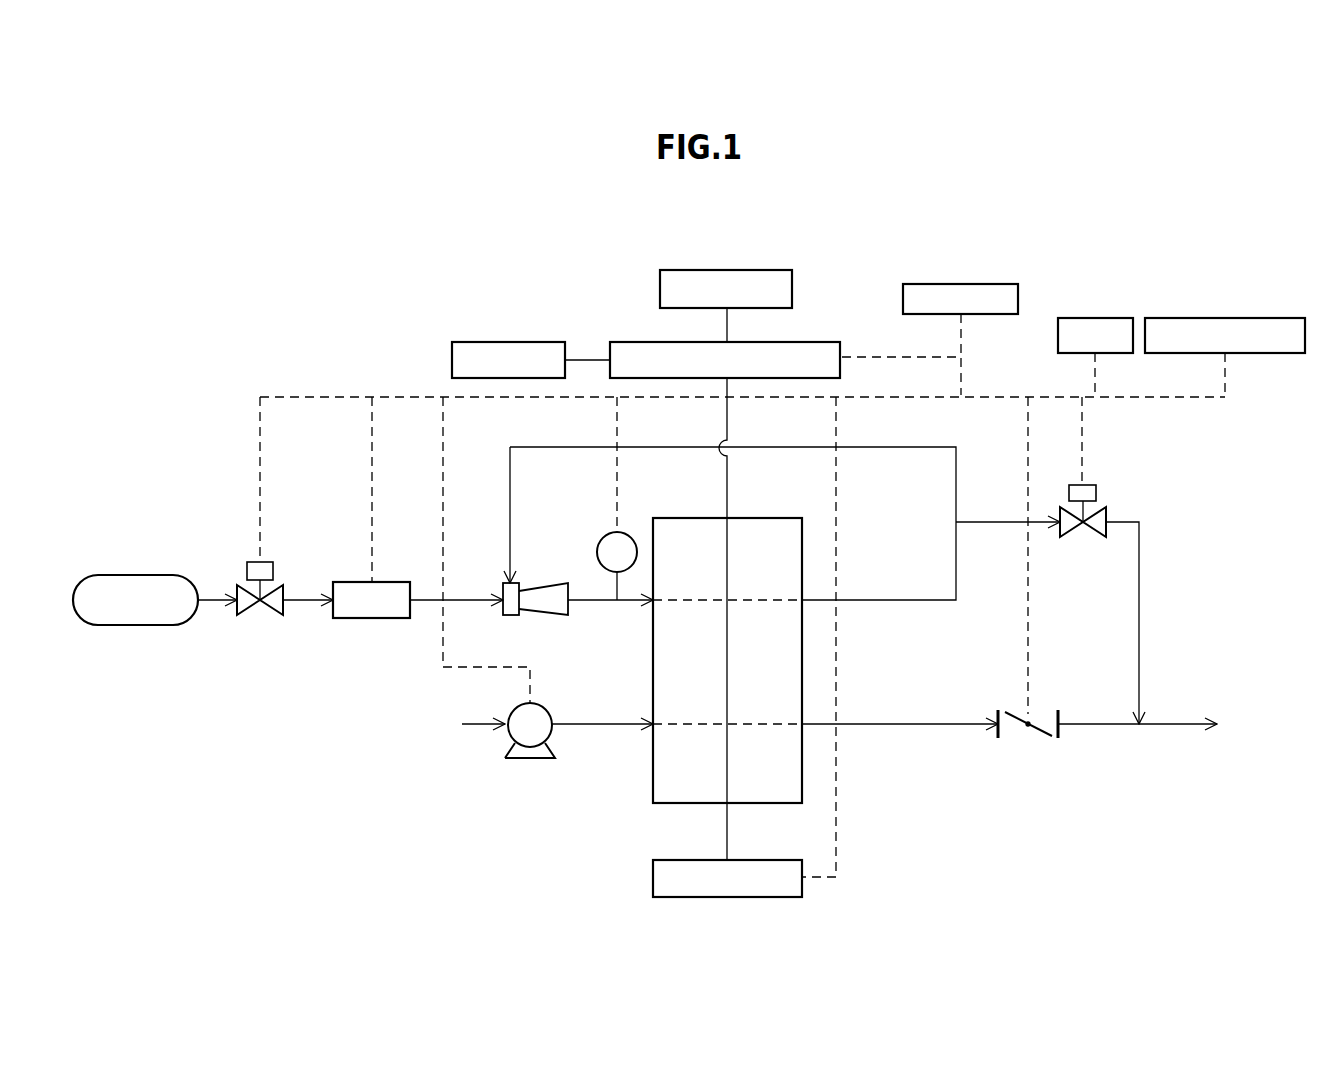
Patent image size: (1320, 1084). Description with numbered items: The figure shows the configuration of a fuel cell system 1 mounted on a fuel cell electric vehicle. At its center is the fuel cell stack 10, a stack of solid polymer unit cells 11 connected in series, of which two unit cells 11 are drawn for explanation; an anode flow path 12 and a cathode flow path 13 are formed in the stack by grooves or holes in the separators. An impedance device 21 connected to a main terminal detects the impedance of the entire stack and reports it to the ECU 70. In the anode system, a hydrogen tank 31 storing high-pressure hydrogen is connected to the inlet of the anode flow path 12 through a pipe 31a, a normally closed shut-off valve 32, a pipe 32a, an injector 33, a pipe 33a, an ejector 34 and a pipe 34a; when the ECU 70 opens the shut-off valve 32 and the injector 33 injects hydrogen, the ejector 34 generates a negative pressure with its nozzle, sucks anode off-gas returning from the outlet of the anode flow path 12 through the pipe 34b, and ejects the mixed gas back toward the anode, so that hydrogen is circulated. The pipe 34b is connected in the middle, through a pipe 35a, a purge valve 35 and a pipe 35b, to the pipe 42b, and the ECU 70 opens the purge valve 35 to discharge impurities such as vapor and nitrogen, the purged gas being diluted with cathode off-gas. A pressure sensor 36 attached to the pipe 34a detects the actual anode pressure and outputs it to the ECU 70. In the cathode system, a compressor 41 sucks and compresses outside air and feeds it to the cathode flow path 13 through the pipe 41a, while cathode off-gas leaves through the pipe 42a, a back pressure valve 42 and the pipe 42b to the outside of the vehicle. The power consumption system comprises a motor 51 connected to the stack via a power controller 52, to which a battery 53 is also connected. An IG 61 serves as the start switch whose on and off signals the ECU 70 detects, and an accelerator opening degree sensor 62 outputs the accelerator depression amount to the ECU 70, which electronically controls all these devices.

The fuel cell system 1 is at (597, 297).
The fuel cell stack 10 is at (737, 512).
The unit cell 11 is at (677, 517).
The anode flow path 12 is at (687, 603).
The cathode flow path 13 is at (687, 727).
The impedance device 21 is at (653, 878).
The hydrogen tank 31 is at (134, 576).
The pipe 31a is at (217, 602).
The shut-off valve 32 is at (286, 590).
The pipe 32a is at (312, 602).
The injector 33 is at (393, 582).
The pipe 33a is at (478, 602).
The ejector 34 is at (548, 584).
The pipe 34a is at (597, 602).
The pipe 34b is at (885, 603).
The purge valve 35 is at (1110, 511).
The pipe 35a is at (991, 525).
The pipe 35b is at (1140, 621).
The pressure sensor 36 is at (606, 534).
The compressor 41 is at (550, 713).
The pipe 41a is at (613, 727).
The back pressure valve 42 is at (1062, 715).
The pipe 42a is at (895, 727).
The pipe 42b is at (1111, 727).
The motor 51 is at (793, 290).
The power controller 52 is at (841, 352).
The battery 53 is at (507, 338).
The IG 61 is at (1090, 313).
The accelerator opening degree sensor 62 is at (1224, 313).
The ECU 70 is at (1019, 304).